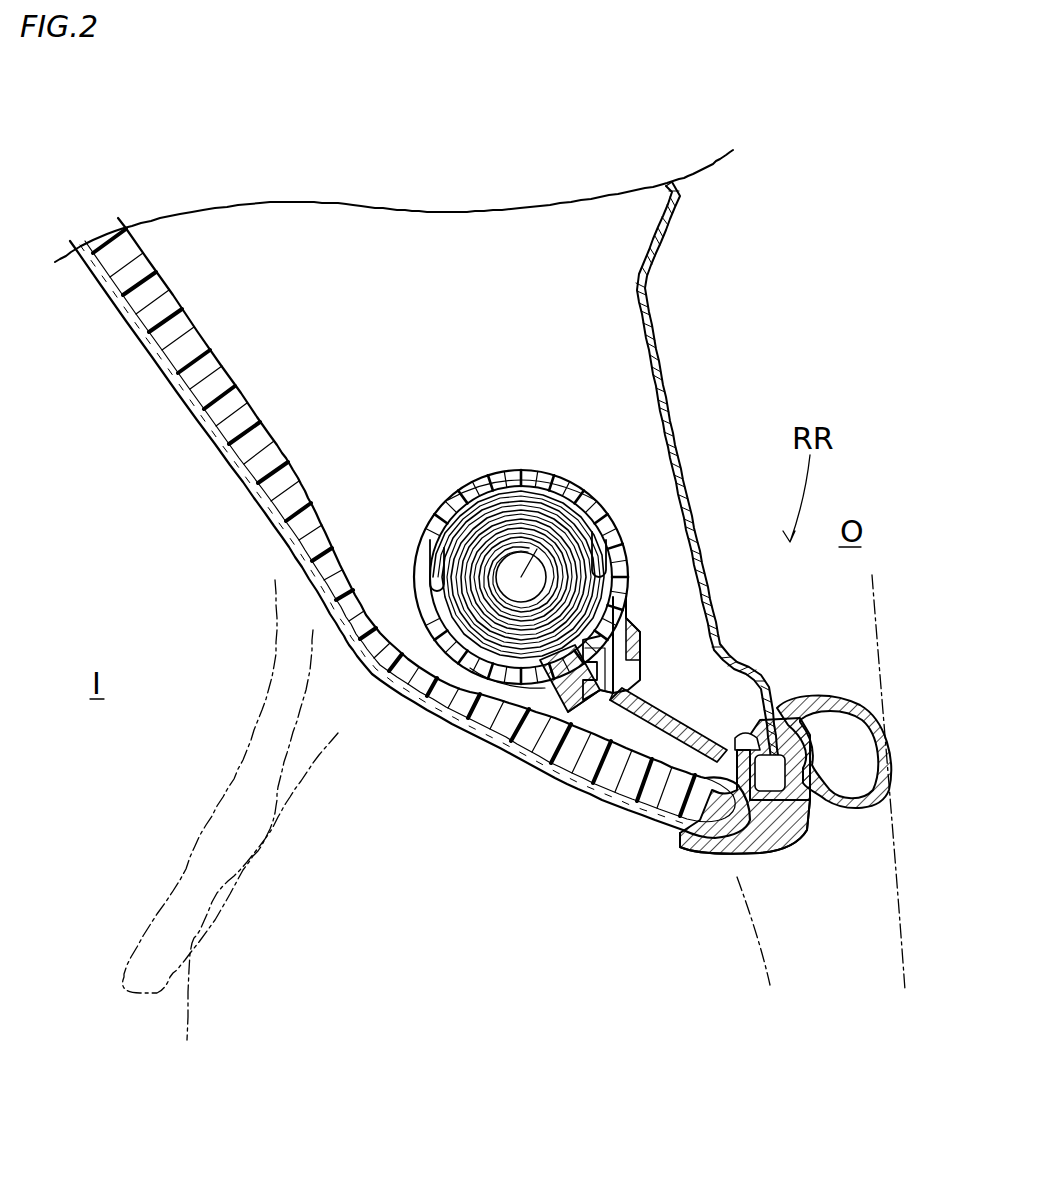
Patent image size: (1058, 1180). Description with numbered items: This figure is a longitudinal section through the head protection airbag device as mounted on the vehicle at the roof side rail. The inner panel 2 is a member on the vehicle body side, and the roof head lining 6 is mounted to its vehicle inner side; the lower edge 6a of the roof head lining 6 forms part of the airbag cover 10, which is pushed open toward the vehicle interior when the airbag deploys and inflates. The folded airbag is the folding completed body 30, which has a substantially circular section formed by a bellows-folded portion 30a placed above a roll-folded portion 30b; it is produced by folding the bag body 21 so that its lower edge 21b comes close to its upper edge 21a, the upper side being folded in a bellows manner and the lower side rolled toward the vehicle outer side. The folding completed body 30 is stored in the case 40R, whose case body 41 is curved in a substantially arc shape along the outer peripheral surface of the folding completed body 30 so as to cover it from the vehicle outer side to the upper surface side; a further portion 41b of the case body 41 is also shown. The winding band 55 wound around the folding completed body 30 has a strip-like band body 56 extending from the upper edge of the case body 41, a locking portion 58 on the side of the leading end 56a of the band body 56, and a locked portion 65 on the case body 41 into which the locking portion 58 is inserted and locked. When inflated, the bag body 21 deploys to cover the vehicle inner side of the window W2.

The inner panel 2 is at (662, 352).
The case 40R is at (549, 440).
The winding band 55 is at (467, 476).
The upper edge of bag body 21a is at (537, 487).
The case body 41 is at (592, 515).
The bellows-folded portion 30a is at (432, 533).
The bracket flange 41b is at (632, 612).
The locked portion 65 is at (642, 640).
The roof head lining 6 is at (290, 520).
The band body 56 is at (420, 570).
The folding completed body 30 is at (447, 622).
The lower edge of bag body 21b is at (497, 605).
The leading end of band body 56a is at (545, 690).
The roll-folded portion 30b is at (502, 630).
The locking portion 58 is at (600, 700).
The lower edge of roof head lining 6a is at (712, 790).
The airbag cover 10 is at (712, 790).
The bag body 21 is at (770, 985).
The window W2 is at (880, 620).